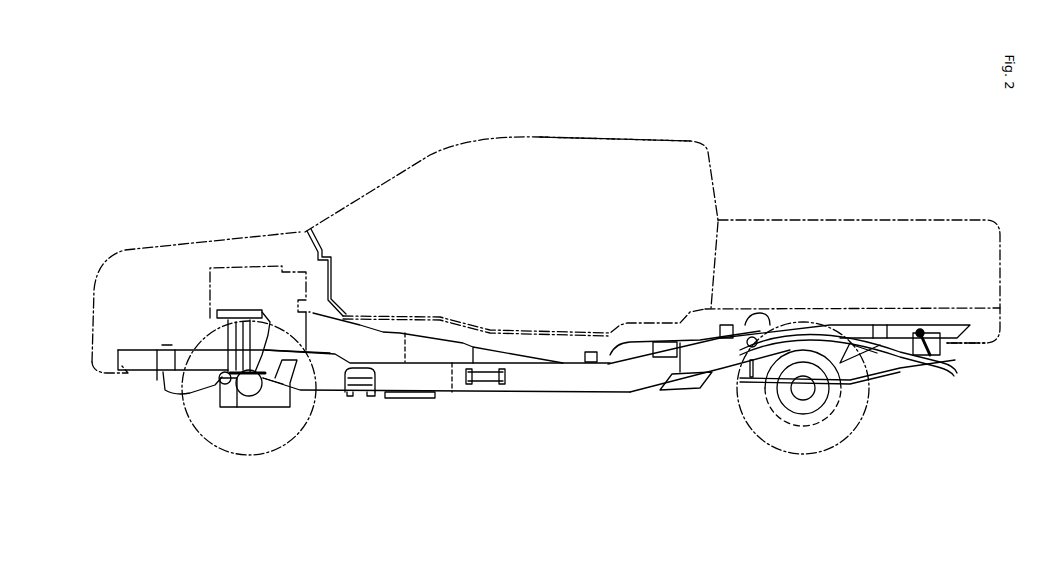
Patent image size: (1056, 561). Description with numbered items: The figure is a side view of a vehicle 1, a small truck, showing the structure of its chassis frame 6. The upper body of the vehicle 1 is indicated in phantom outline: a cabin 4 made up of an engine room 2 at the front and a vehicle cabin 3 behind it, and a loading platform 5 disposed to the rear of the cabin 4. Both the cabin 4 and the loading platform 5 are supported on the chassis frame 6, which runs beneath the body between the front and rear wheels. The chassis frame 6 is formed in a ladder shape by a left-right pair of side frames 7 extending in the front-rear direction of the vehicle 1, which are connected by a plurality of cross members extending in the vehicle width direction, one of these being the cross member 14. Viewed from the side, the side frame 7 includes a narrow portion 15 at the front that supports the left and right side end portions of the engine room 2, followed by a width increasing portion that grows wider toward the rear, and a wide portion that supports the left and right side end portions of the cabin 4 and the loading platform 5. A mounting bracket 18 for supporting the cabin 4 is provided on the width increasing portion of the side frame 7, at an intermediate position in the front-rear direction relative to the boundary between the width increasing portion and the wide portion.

The vehicle 1 is at (363, 130).
The engine room 2 is at (170, 232).
The vehicle cabin 3 is at (522, 130).
The cabin 4 is at (636, 116).
The loading platform 5 is at (835, 210).
The chassis frame 6 is at (507, 403).
The side frame 7 is at (558, 393).
The cross member 14 is at (247, 455).
The narrow portion 15 is at (205, 416).
The mounting bracket 18 is at (355, 392).